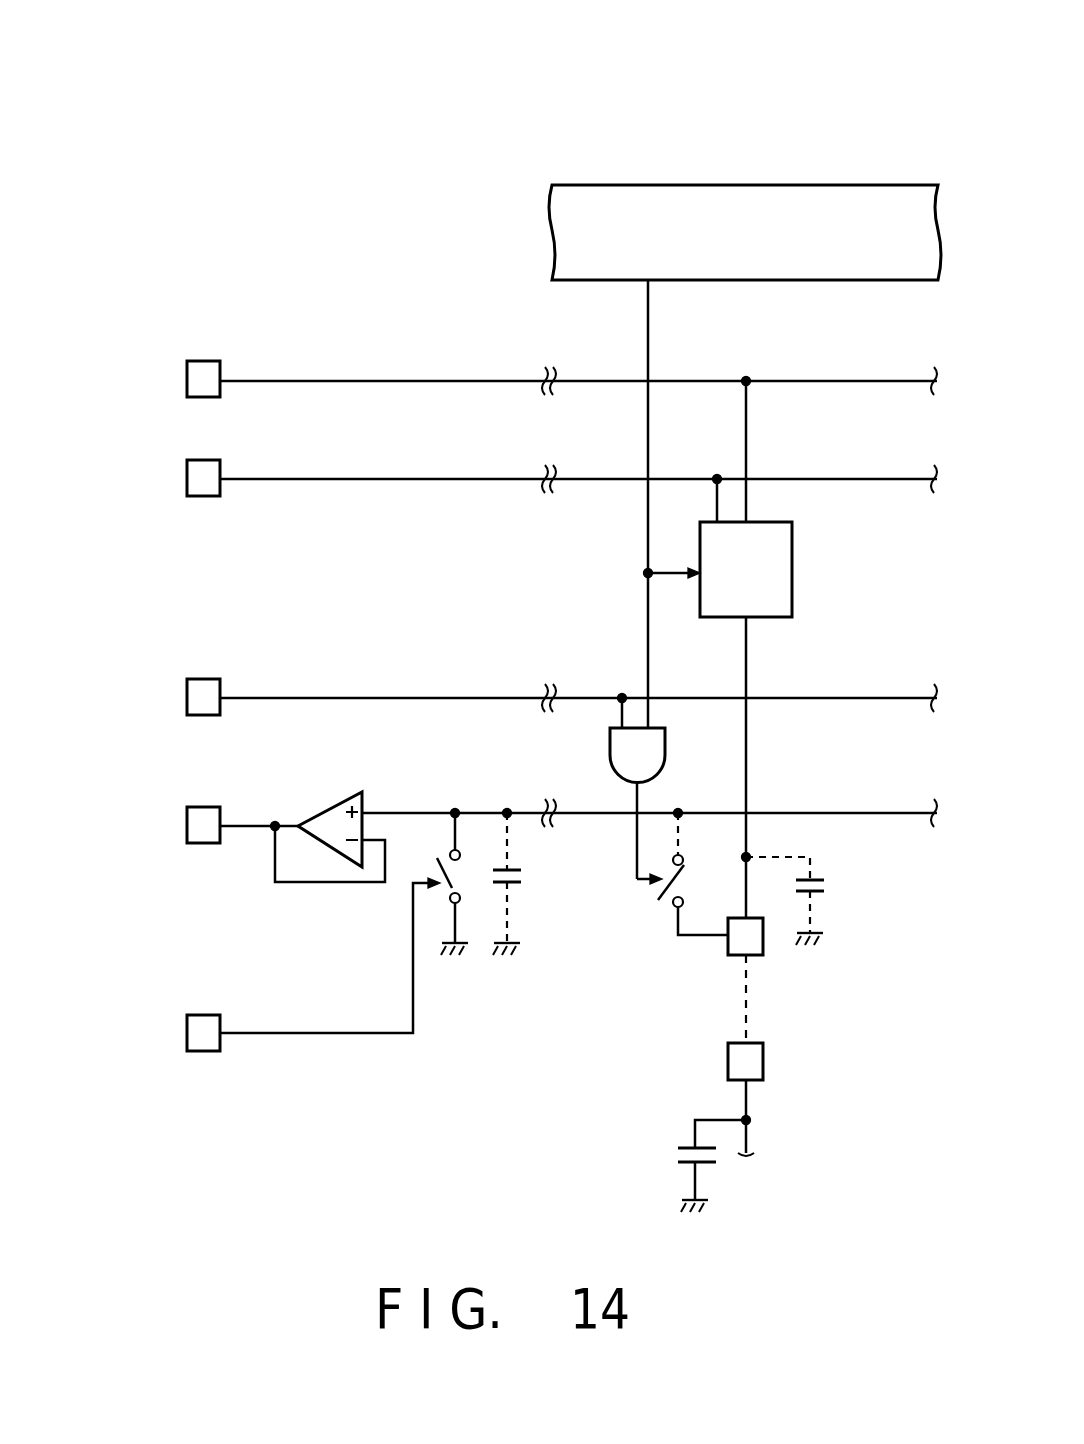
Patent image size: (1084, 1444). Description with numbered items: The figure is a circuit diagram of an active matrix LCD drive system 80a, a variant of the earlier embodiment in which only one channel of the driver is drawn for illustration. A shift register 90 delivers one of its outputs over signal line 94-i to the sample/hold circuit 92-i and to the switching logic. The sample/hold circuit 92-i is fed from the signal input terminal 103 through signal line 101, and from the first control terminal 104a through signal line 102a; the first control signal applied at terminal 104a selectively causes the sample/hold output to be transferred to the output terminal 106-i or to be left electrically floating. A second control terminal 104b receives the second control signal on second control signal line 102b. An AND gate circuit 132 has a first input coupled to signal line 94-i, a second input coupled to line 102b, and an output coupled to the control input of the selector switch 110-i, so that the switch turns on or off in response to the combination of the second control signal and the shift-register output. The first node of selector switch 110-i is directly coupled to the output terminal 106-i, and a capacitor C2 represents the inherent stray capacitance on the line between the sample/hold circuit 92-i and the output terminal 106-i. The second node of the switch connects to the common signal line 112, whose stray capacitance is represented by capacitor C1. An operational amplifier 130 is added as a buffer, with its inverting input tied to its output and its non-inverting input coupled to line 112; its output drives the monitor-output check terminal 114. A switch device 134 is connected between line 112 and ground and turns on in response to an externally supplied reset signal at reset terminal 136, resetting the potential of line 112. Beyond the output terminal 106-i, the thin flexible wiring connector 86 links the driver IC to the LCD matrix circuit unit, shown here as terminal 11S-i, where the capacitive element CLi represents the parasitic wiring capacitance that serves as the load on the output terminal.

The LCD system 80a is at (506, 106).
The shift register 90 is at (820, 184).
The signal line 94-i is at (650, 325).
The signal input terminal 103 is at (204, 360).
The signal line 101 is at (443, 381).
The first control terminal 104a is at (213, 458).
The signal line 102a is at (454, 479).
The second control terminal 104b is at (213, 678).
The second control signal line 102b is at (458, 696).
The sample/hold circuit 92-i is at (794, 573).
The AND gate circuit 132 is at (666, 758).
The signal line 112 is at (852, 814).
The monitor-output terminal 114 is at (207, 806).
The operational amplifier 130 is at (330, 800).
The switch device 134 is at (436, 892).
The capacitor C1 is at (521, 886).
The selector switch 110-i is at (658, 900).
The capacitor C2 is at (826, 890).
The output terminal 106-i is at (764, 957).
The flexible wiring connector 86 is at (744, 994).
The switching element 11S-i is at (764, 1070).
The capacitive element CLi is at (675, 1160).
The reset terminal 136 is at (207, 1053).